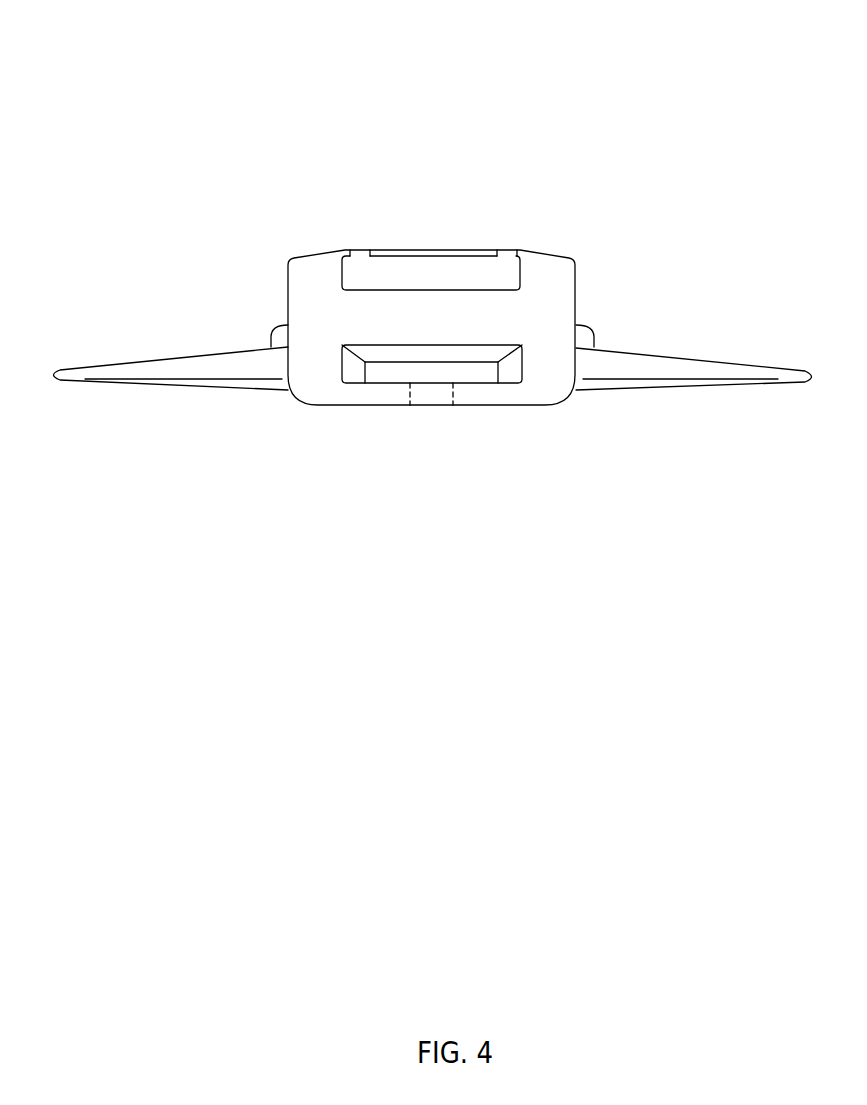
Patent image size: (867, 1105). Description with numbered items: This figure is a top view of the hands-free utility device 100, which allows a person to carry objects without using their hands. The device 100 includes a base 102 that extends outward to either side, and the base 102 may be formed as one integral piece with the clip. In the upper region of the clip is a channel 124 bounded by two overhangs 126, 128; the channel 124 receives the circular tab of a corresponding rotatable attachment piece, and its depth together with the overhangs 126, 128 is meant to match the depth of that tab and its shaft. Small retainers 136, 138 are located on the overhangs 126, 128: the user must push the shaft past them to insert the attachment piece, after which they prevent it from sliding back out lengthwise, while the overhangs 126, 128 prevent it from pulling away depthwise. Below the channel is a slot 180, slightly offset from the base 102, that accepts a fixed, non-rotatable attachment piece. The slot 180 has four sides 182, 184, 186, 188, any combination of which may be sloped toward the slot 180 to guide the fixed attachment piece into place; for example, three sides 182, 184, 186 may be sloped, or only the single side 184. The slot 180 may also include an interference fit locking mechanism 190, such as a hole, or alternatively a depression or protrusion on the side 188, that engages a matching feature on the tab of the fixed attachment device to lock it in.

The utility device 100 is at (710, 88).
The base 102 is at (207, 358).
The channel 124 is at (421, 285).
The overhang 126 is at (350, 251).
The overhang 128 is at (511, 251).
The left tab 136 is at (360, 250).
The right tab 138 is at (504, 250).
The slot 180 is at (483, 377).
The side 182 is at (343, 380).
The side 184 is at (387, 355).
The side 186 is at (520, 378).
The side 188 is at (468, 398).
The interference fit locking mechanism 190 is at (428, 398).